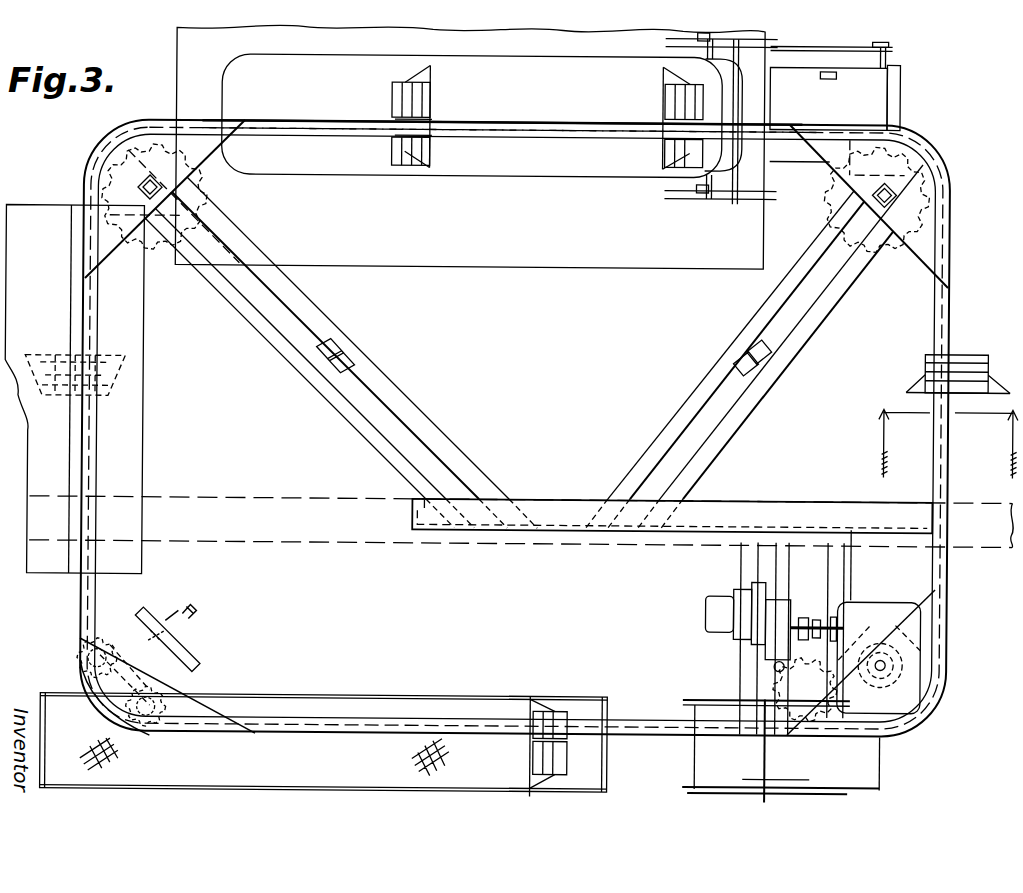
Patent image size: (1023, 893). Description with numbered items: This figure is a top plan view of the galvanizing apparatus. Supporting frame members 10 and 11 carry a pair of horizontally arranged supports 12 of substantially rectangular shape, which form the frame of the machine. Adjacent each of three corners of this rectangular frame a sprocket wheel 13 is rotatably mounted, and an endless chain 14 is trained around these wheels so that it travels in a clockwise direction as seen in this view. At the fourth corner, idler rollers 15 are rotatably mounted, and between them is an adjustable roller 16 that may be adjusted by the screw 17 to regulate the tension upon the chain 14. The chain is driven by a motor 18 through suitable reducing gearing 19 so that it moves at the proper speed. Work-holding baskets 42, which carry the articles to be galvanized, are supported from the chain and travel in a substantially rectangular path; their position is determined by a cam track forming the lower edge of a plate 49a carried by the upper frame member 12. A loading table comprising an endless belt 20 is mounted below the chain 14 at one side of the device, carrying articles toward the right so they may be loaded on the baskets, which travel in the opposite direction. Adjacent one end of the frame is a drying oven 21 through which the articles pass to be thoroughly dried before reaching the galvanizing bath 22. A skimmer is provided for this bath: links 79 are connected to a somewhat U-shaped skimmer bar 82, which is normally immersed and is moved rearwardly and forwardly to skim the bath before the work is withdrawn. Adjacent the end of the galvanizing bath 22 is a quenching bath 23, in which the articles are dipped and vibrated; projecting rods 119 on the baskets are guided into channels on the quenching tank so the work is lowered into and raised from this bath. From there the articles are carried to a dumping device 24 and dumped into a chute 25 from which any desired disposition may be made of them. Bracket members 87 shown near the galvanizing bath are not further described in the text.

The supporting frame member 10 is at (320, 348).
The supporting frame member 11 is at (948, 443).
The horizontally arranged support 12 is at (502, 134).
The sprocket wheel 13 is at (215, 175).
The endless chain 14 is at (944, 294).
The idler roller 15 is at (78, 652).
The adjustable roller 16 is at (92, 708).
The screw 17 is at (188, 615).
The motor 18 is at (768, 605).
The reducing gearing 19 is at (862, 620).
The endless belt 20 is at (418, 695).
The drying oven 21 is at (125, 346).
The galvanizing bath 22 is at (505, 102).
The quenching bath 23 is at (853, 112).
The dumping device 24 is at (712, 700).
The chute 25 is at (856, 771).
The work-holding basket 42 is at (543, 708).
The plate 49a is at (538, 120).
The link 79 is at (848, 50).
The skimmer bar 82 is at (724, 100).
The bracket 87 is at (672, 48).
The projecting rod 119 is at (905, 393).